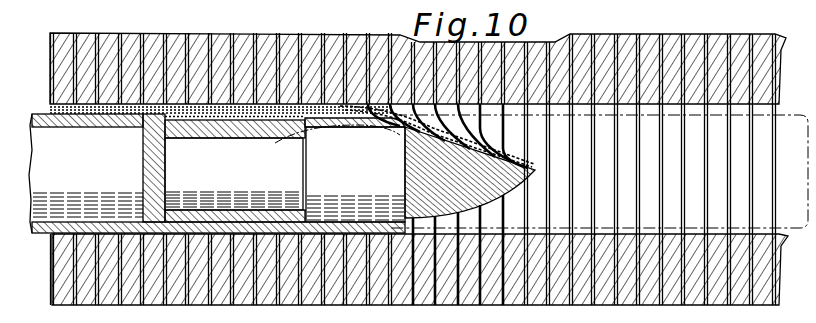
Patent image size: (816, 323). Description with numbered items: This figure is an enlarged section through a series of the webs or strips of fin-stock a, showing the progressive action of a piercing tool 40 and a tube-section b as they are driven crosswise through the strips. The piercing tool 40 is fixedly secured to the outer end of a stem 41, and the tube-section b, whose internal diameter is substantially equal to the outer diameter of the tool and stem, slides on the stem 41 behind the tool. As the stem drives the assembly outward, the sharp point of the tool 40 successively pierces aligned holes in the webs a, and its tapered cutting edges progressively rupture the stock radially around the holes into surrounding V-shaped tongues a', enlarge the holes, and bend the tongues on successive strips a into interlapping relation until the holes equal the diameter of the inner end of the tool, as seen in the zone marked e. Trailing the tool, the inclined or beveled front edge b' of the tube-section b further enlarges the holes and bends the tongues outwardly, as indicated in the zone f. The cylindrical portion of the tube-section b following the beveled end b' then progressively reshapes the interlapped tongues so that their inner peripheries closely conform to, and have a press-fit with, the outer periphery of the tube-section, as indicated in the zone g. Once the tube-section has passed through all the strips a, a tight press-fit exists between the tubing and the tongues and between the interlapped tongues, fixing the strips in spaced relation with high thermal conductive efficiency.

The strips of fin-stock a is at (419, 156).
The V-shaped tongues a' is at (277, 122).
The tube-section b is at (212, 196).
The inclined edge of tube-section b' is at (448, 163).
The zone e is at (402, 129).
The zone f is at (357, 135).
The zone g is at (268, 142).
The piercing tool 40 is at (326, 160).
The stem 41 is at (98, 168).